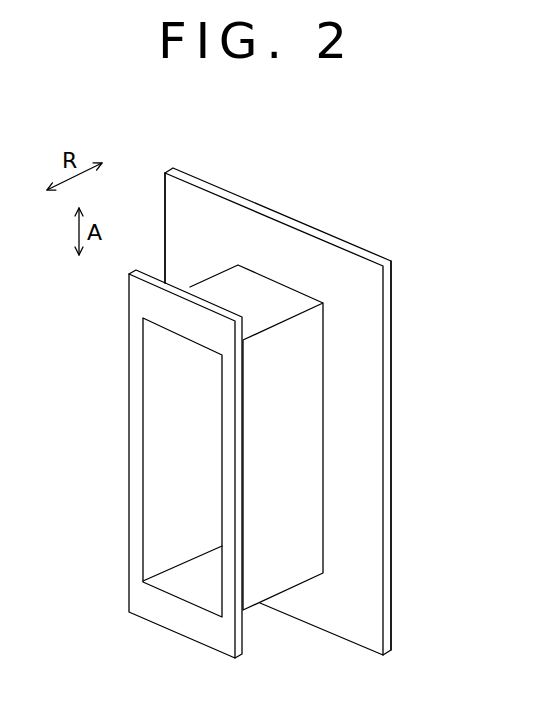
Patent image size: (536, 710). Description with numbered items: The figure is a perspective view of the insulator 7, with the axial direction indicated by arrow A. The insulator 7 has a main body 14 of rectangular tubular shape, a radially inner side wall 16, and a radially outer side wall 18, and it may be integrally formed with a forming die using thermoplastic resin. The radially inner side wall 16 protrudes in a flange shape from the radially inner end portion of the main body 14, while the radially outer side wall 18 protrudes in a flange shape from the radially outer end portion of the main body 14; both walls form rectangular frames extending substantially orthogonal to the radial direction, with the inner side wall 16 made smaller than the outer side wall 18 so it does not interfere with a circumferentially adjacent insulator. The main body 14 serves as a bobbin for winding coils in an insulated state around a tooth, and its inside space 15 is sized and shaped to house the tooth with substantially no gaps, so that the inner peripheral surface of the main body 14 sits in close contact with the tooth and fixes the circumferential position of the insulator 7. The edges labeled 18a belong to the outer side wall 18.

The insulator 7 is at (405, 253).
The main body 14 is at (265, 297).
The inside space 15 is at (198, 465).
The radially inner side wall 16 is at (128, 300).
The radially outer side wall 18 is at (210, 200).
The plate edge 18a is at (164, 207).